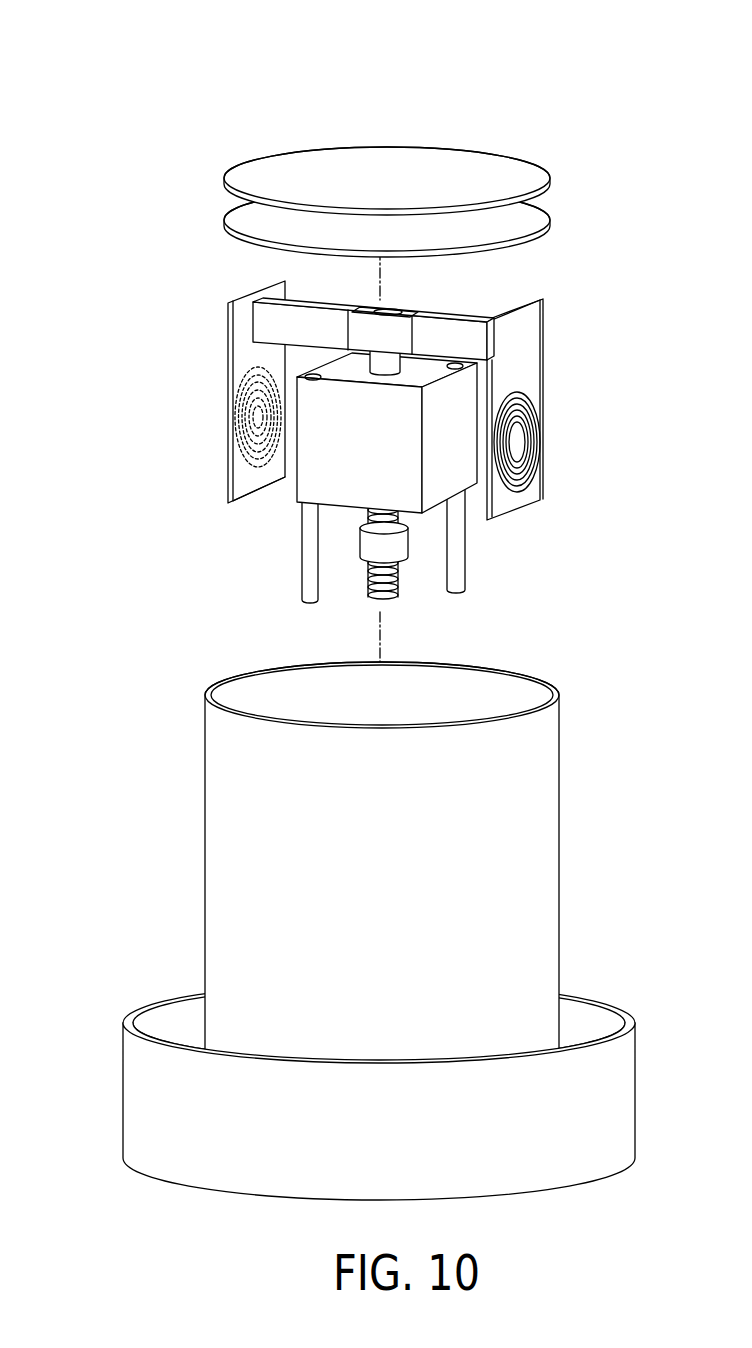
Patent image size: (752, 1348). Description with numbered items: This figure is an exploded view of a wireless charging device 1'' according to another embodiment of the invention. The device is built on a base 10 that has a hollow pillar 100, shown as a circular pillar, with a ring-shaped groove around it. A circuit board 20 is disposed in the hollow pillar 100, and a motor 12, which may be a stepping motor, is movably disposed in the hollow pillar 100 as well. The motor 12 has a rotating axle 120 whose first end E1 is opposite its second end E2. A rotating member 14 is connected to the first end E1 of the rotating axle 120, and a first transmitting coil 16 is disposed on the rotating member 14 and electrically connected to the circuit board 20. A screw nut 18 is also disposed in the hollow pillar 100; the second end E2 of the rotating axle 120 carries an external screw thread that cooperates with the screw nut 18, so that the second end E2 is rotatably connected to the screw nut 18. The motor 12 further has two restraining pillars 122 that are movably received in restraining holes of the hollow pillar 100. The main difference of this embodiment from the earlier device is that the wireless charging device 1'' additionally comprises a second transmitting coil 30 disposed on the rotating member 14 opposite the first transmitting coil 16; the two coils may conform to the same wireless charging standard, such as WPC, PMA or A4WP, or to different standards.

The wireless charging device 1'' is at (644, 43).
The base 10 is at (342, 931).
The hollow pillar 100 is at (220, 805).
The motor 12 is at (295, 470).
The rotating axle 120 is at (375, 360).
The restraining pillars 122 is at (310, 552).
The rotating member 14 is at (453, 316).
The first transmitting coil 16 is at (537, 408).
The screw nut 18 is at (400, 545).
The circuit board 20 is at (548, 208).
The second transmitting coil 30 is at (240, 402).
The first end E1 is at (375, 311).
The second end E2 is at (372, 598).